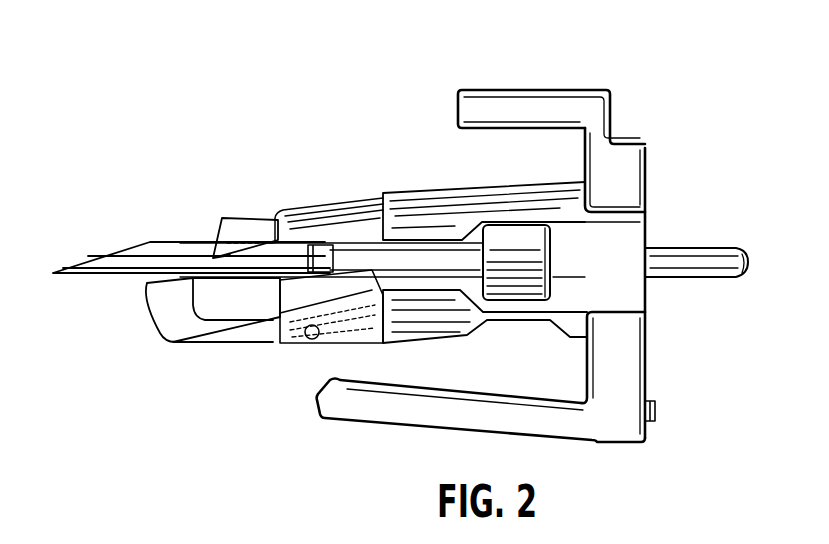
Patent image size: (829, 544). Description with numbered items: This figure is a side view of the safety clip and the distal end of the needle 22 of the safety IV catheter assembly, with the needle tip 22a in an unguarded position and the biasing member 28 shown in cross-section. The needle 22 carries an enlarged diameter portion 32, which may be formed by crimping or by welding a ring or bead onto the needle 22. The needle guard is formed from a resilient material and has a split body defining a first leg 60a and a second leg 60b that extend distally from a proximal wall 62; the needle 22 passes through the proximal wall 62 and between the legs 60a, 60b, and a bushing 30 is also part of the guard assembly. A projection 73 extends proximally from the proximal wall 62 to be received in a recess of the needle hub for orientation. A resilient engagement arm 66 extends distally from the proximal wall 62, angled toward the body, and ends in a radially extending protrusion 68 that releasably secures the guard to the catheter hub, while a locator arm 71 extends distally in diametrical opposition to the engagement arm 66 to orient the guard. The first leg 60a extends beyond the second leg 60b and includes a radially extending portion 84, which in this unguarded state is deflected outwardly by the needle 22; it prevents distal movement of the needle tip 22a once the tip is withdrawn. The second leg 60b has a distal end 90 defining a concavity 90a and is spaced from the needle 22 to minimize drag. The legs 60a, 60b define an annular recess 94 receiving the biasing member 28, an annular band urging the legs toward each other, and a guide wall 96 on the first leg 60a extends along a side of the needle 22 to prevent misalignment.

The needle 22 is at (707, 248).
The needle tip 22a is at (98, 255).
The biasing member 28 is at (351, 240).
The bushing 30 is at (508, 245).
The enlarged diameter portion 32 is at (320, 257).
The first leg 60a is at (413, 332).
The second leg 60b is at (405, 200).
The proximal wall 62 is at (630, 186).
The resilient engagement arm 66 is at (410, 431).
The radially extending protrusion 68 is at (330, 372).
The locator arm 71 is at (522, 92).
The projection 73 is at (658, 410).
The radially extending portion 84 is at (155, 301).
The distal end 90 is at (258, 217).
The concavity 90a is at (232, 215).
The annular recess 94 is at (305, 340).
The guide wall 96 is at (348, 287).